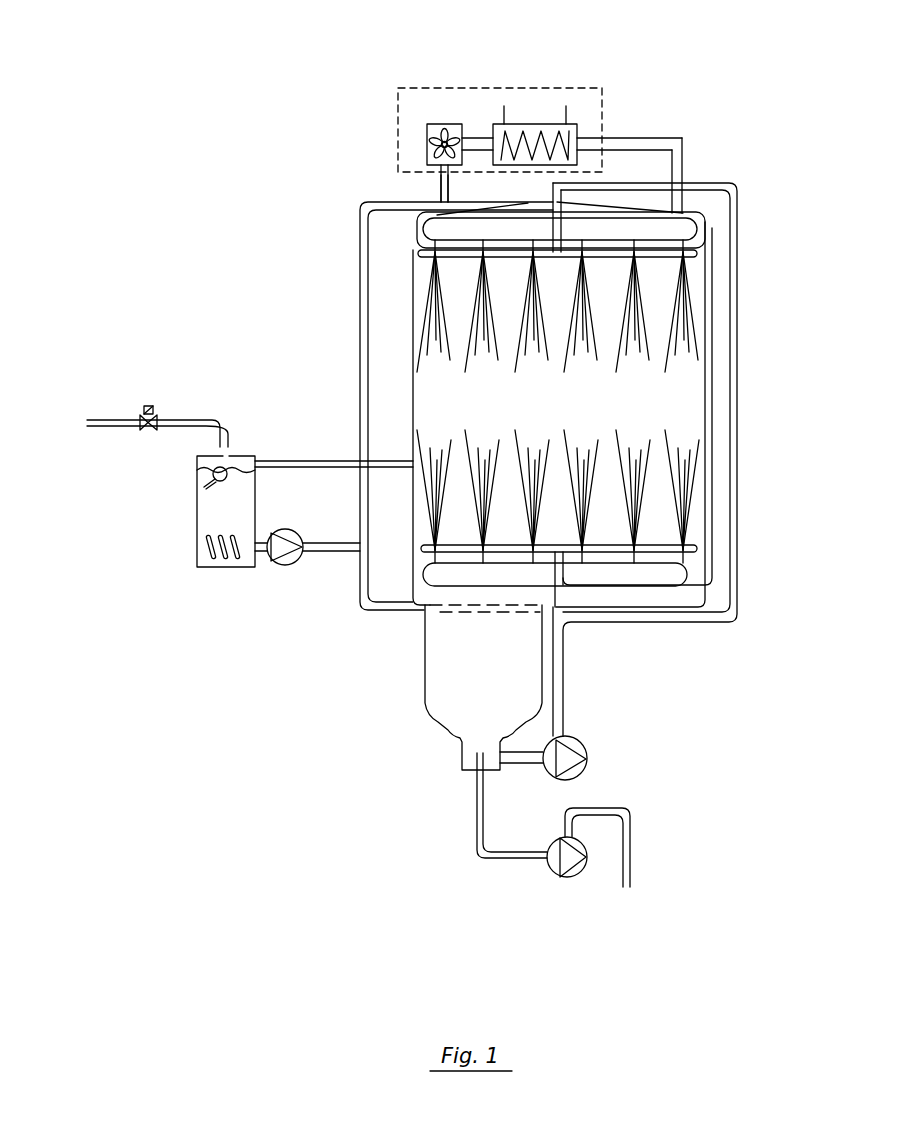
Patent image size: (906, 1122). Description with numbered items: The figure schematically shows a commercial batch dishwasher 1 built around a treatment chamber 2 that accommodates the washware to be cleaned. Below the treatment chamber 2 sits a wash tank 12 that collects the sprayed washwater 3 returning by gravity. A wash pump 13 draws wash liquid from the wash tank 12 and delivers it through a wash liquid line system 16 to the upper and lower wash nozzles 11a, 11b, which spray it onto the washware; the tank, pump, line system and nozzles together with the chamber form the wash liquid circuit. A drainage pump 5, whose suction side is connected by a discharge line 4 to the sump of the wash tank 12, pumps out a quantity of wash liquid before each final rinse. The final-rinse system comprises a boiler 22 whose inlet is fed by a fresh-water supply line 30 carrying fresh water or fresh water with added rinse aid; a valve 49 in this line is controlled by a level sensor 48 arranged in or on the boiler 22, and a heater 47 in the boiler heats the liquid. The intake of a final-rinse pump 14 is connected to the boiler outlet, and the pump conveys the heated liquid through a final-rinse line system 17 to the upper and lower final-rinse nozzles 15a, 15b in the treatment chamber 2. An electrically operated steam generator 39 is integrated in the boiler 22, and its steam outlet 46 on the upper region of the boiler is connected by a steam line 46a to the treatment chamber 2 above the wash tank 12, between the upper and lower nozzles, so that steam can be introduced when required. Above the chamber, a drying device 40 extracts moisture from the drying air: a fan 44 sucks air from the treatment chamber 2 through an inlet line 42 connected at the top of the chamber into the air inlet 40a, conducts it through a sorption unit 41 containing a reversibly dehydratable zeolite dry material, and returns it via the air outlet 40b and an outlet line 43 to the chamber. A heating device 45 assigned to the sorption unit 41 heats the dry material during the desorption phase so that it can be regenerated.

The dishwasher 1 is at (165, 51).
The treatment chamber 2 is at (452, 400).
The washwater 3 is at (437, 705).
The discharge line 4 is at (512, 849).
The drainage pump 5 is at (588, 873).
The wash nozzle 11a is at (435, 243).
The wash nozzle 11b is at (591, 587).
The wash tank 12 is at (440, 687).
The wash pump 13 is at (577, 749).
The final-rinse pump 14 is at (287, 560).
The final-rinse nozzle 15a is at (437, 213).
The final-rinse nozzle 15b is at (623, 652).
The wash liquid line system 16 is at (737, 410).
The final-rinse line system 17 is at (418, 406).
The boiler 22 is at (178, 547).
The fresh-water supply line 30 is at (157, 396).
The steam generator 39 is at (178, 547).
The drying device 40 is at (398, 88).
The air inlet 40a is at (440, 173).
The air outlet 40b is at (589, 100).
The sorption unit 41 is at (584, 90).
The inlet line 42 is at (383, 174).
The outlet line 43 is at (718, 132).
The fan 44 is at (472, 86).
The heating device 45 is at (548, 88).
The steam outlet 46 is at (238, 418).
The steam line 46a is at (334, 424).
The heater 47 is at (230, 557).
The level sensor 48 is at (163, 486).
The valve 49 is at (116, 385).